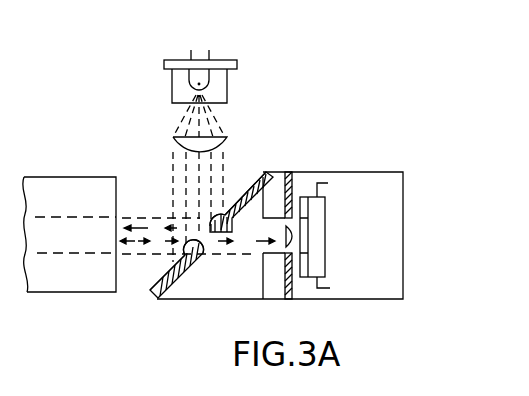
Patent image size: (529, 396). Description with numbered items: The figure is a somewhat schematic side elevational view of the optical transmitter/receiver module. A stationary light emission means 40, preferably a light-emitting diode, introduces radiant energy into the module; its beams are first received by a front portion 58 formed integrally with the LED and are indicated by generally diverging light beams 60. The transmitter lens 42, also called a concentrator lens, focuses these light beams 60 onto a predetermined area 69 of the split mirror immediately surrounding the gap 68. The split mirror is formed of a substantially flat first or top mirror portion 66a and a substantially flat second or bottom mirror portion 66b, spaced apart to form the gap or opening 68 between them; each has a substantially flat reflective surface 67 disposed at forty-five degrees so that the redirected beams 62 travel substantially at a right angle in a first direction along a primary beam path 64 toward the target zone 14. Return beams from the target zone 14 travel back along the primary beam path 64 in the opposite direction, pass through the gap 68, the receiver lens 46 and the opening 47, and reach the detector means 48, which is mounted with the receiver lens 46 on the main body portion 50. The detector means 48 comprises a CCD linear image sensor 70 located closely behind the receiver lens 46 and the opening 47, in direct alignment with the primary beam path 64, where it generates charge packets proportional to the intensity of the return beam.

The target zone 14 is at (72, 285).
The light emission means 40 is at (227, 81).
The transmitter lens 42 is at (228, 139).
The receiver lens 46 is at (295, 240).
The opening 47 is at (298, 207).
The detector means 48 is at (325, 207).
The main body portion 50 is at (366, 299).
The front portion 58 is at (173, 103).
The light beams 60 is at (218, 120).
The redirected beams 62 is at (163, 217).
The primary beam path 64 is at (129, 243).
The first or top mirror portion 66a is at (269, 174).
The second or bottom mirror portion 66b is at (152, 293).
The reflective surface 67 is at (244, 190).
The gap or opening 68 is at (214, 233).
The area 69 is at (234, 224).
The CCD linear image sensor 70 is at (317, 232).